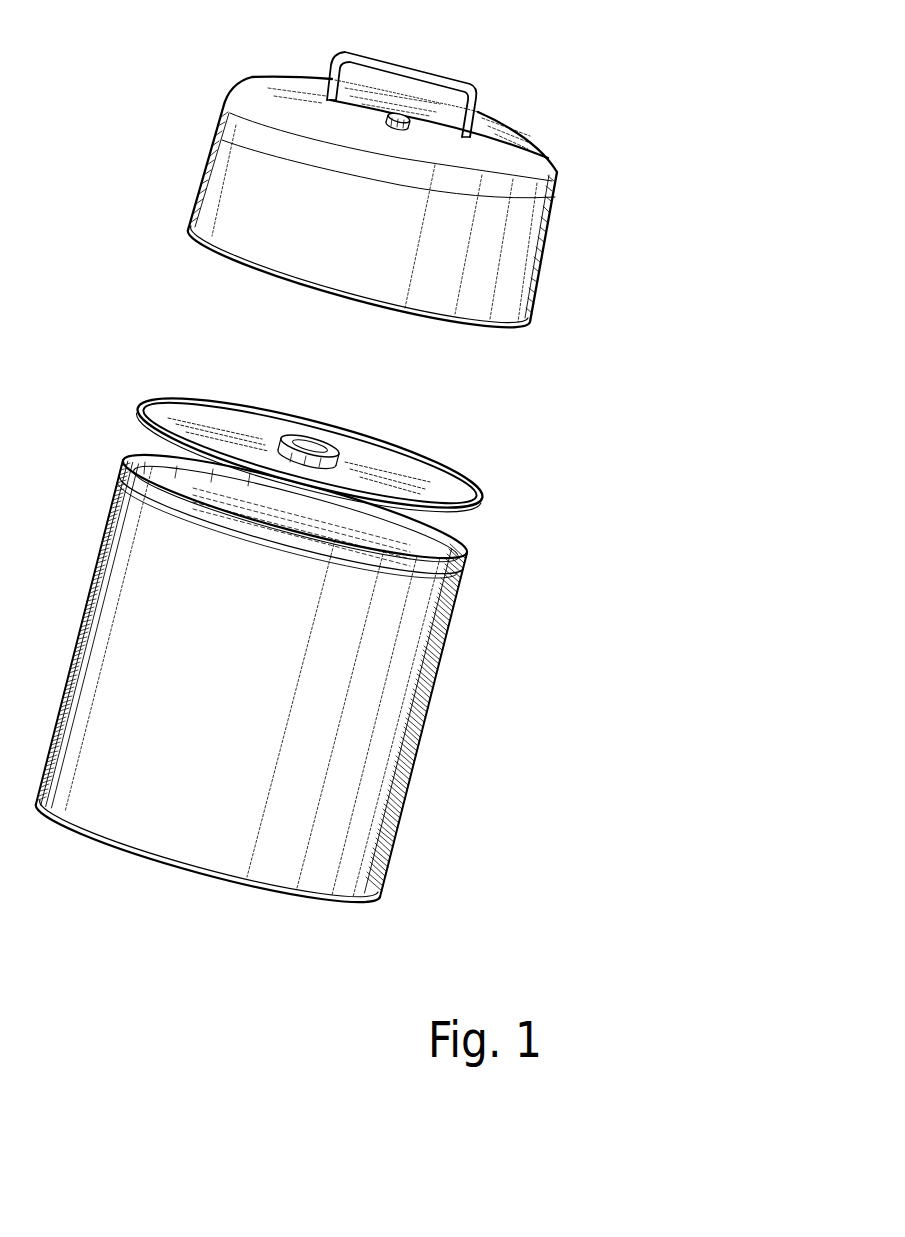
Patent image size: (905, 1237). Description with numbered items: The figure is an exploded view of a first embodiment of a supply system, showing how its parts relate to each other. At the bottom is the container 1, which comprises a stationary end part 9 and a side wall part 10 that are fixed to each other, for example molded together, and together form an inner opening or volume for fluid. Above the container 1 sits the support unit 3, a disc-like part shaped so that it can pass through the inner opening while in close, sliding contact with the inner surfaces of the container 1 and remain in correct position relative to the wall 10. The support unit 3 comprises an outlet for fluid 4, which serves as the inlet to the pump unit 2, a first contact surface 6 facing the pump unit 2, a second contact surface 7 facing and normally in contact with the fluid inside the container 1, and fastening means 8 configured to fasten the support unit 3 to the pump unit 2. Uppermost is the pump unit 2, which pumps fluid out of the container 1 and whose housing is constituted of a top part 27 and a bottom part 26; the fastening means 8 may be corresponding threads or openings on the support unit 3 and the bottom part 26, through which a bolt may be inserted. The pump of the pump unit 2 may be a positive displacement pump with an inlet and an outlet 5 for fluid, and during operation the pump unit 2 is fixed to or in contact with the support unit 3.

The container 1 is at (296, 679).
The pump unit 2 is at (366, 166).
The support unit 3 is at (343, 431).
The outlet for fluid 4 is at (339, 446).
The outlet 5 is at (411, 121).
The first contact surface 6 is at (421, 492).
The second contact surface 7 is at (436, 514).
The fastening means 8 is at (272, 444).
The stationary end part 9 is at (113, 849).
The side wall part 10 is at (424, 741).
The bottom part 26 is at (185, 232).
The top part 27 is at (247, 78).